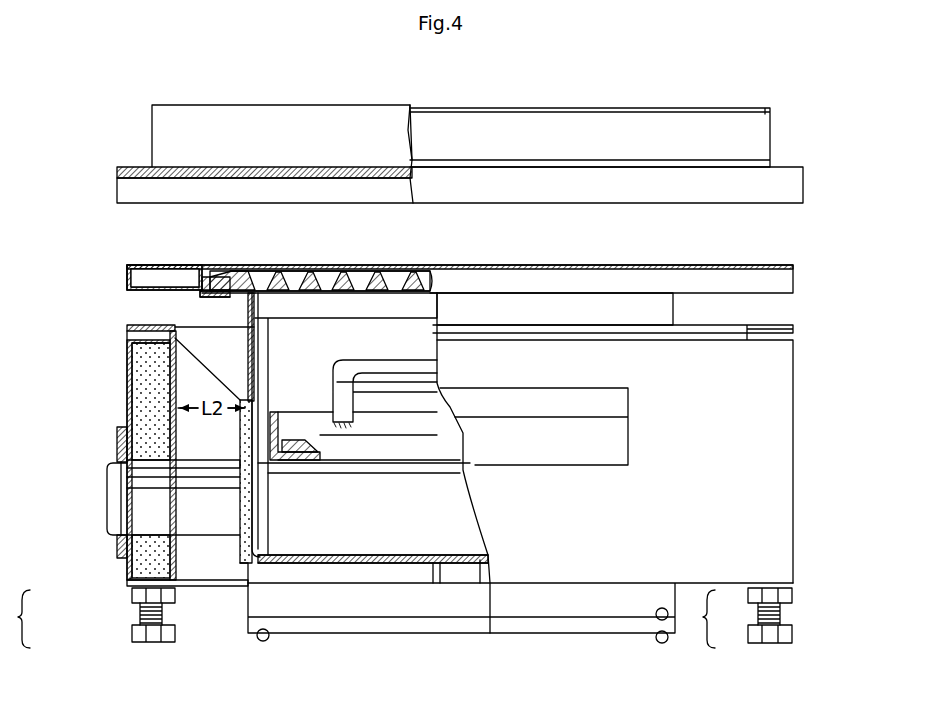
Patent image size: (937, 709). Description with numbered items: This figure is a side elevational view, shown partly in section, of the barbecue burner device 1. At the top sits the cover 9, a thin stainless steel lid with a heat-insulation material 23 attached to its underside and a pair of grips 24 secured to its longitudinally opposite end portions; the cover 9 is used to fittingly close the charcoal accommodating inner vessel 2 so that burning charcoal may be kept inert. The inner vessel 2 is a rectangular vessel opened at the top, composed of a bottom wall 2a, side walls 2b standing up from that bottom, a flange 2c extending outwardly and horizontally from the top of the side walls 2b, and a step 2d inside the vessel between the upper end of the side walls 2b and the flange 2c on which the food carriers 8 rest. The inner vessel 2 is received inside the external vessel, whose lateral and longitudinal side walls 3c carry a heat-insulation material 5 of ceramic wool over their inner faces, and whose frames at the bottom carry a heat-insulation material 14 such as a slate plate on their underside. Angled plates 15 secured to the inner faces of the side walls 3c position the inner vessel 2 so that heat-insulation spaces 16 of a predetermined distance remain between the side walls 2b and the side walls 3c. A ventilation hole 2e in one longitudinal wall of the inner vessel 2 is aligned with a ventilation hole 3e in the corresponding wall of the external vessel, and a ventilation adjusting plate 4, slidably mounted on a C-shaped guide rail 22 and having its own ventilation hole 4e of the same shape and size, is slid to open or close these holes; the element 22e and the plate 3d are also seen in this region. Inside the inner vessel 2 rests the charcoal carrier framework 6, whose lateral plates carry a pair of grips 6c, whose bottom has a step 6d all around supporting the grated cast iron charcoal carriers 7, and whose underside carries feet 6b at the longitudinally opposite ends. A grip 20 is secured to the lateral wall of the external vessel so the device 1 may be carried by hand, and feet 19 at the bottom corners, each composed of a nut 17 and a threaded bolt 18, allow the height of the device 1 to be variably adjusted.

The barbecue burner device 1 is at (252, 104).
The grips 24 is at (626, 107).
The heat-insulation material 23 is at (241, 178).
The cover 9 is at (779, 162).
The inner vessel 2 is at (184, 262).
The flange 2c is at (142, 262).
The step 2d is at (221, 278).
The food carriers 8 is at (318, 269).
The side walls 2b is at (257, 353).
The ventilation hole 2e is at (255, 501).
The bottom wall 2a is at (300, 554).
The top plate 3d is at (752, 323).
The heat-insulation spaces 16 is at (197, 340).
The angled plates 15 is at (213, 360).
The side walls 3c is at (128, 362).
The heat-insulation material 5 is at (141, 395).
The ventilation adjusting plate 4 is at (122, 461).
The ventilation hole 3e is at (150, 505).
The ventilation hole 4e is at (115, 470).
The guide rail 22 is at (120, 428).
The lower bolt 22e is at (118, 522).
The charcoal carrier framework 6 is at (319, 408).
The step 6d is at (279, 430).
The charcoal carriers 7 is at (299, 440).
The grips 6c is at (375, 358).
The feet 6b is at (250, 568).
The grips 20 is at (629, 398).
The heat-insulation material 14 is at (250, 631).
The feet 19 is at (366, 619).
The nut 17 is at (131, 596).
The bolt 18 is at (131, 634).